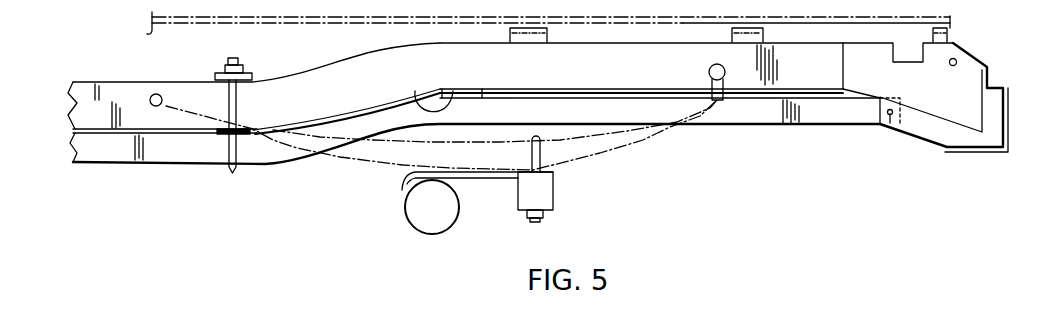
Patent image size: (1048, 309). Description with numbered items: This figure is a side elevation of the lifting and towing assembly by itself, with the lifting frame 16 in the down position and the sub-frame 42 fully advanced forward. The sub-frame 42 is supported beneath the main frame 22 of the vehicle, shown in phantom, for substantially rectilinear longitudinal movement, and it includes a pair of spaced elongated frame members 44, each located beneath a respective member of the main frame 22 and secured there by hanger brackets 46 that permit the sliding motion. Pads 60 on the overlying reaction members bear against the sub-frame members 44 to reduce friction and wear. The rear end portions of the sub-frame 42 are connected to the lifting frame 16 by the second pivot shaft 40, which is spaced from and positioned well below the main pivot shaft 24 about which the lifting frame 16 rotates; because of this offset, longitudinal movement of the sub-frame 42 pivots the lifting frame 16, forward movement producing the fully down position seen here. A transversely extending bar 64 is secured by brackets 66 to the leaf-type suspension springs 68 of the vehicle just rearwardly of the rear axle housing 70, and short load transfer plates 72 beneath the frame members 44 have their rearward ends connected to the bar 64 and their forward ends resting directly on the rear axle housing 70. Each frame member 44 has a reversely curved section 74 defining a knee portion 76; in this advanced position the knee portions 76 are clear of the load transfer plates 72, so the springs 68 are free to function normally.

The lifting frame 16 is at (941, 150).
The main frame 22 is at (132, 88).
The main pivot shaft 24 is at (957, 58).
The second pivot shaft 40 is at (888, 125).
The sub-frame 42 is at (752, 128).
The frame members 44 is at (115, 153).
The hanger brackets 46 is at (233, 172).
The pads 60 is at (410, 98).
The transversely extending bar 64 is at (555, 197).
The brackets 66 is at (542, 148).
The leaf-type suspension springs 68 is at (655, 135).
The rear axle housing 70 is at (409, 222).
The load transfer plates 72 is at (482, 180).
The reversely curved section 74 is at (360, 122).
The knee portion 76 is at (288, 165).